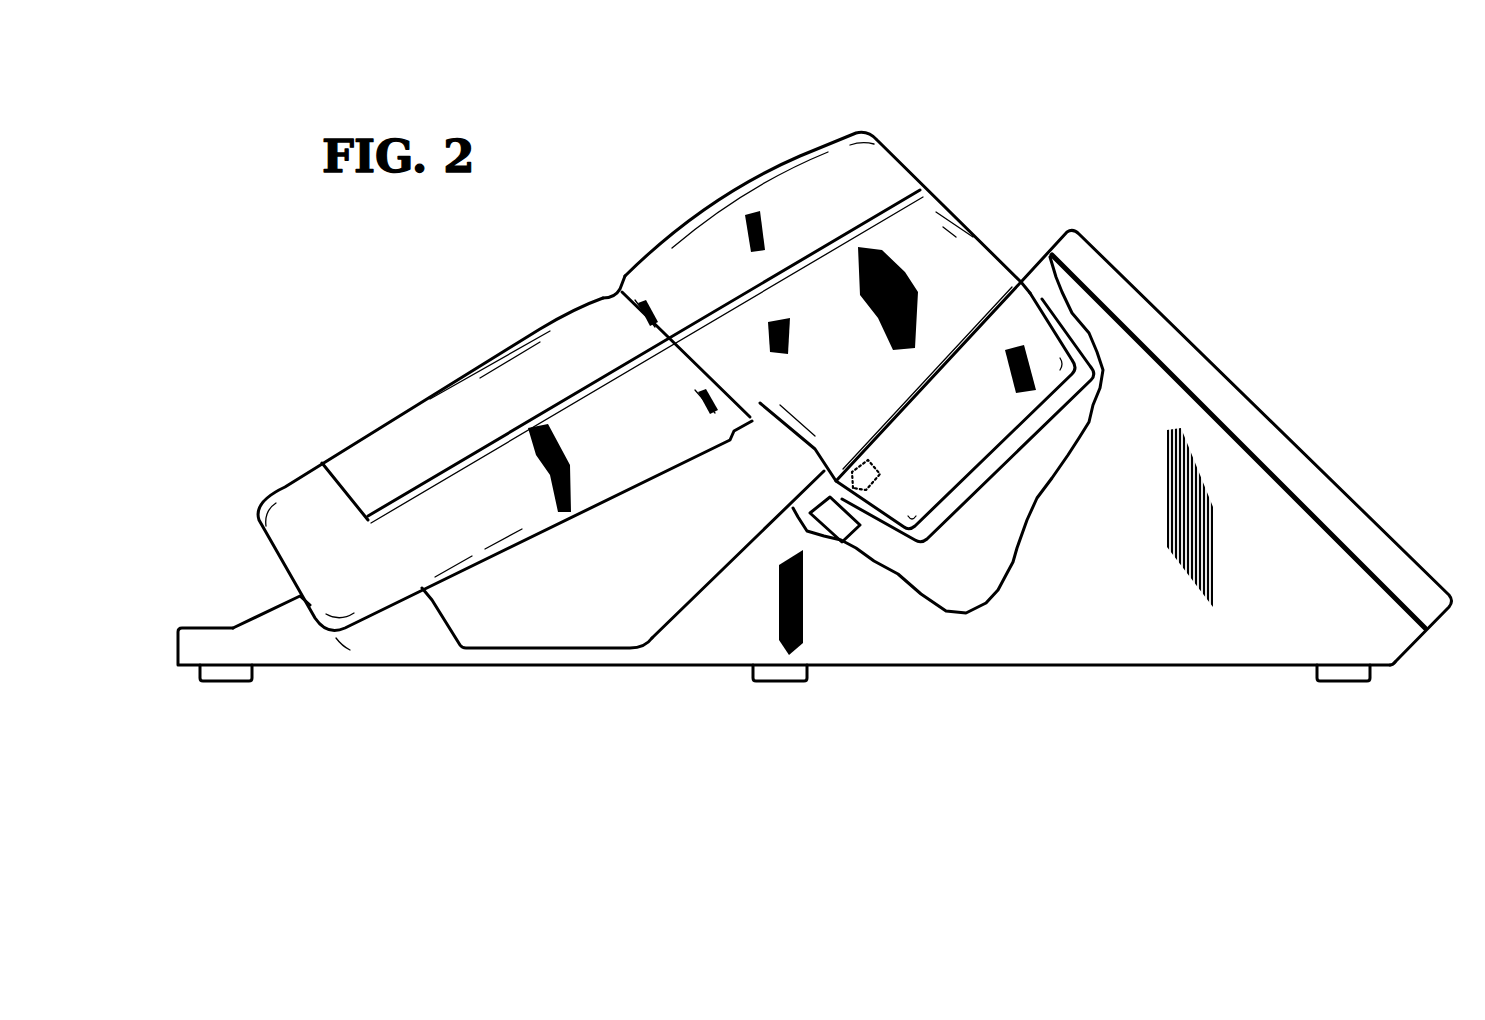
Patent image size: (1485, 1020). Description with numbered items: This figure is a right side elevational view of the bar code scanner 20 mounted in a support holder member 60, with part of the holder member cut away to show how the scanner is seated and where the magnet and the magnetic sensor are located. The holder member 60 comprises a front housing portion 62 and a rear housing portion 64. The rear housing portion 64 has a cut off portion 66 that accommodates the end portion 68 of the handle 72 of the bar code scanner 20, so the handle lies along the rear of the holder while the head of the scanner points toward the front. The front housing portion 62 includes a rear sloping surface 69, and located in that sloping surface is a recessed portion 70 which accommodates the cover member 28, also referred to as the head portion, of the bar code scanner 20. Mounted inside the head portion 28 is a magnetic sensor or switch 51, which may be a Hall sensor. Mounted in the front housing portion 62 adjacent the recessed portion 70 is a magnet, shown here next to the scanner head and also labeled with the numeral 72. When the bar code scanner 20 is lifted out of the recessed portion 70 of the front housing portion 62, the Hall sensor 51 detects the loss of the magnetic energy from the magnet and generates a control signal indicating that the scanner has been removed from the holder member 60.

The support holder member 60 is at (1190, 118).
The bar code scanner 20 is at (771, 173).
The cover member 28 is at (1035, 315).
The handle 72 is at (399, 408).
The magnetic sensor 51 is at (882, 477).
The rear sloping surface 69 is at (743, 548).
The recessed portion 70 is at (951, 518).
The rear housing portion 64 is at (250, 619).
The cut off portion 66 is at (338, 637).
The end portion 68 is at (370, 597).
The front housing portion 62 is at (988, 666).